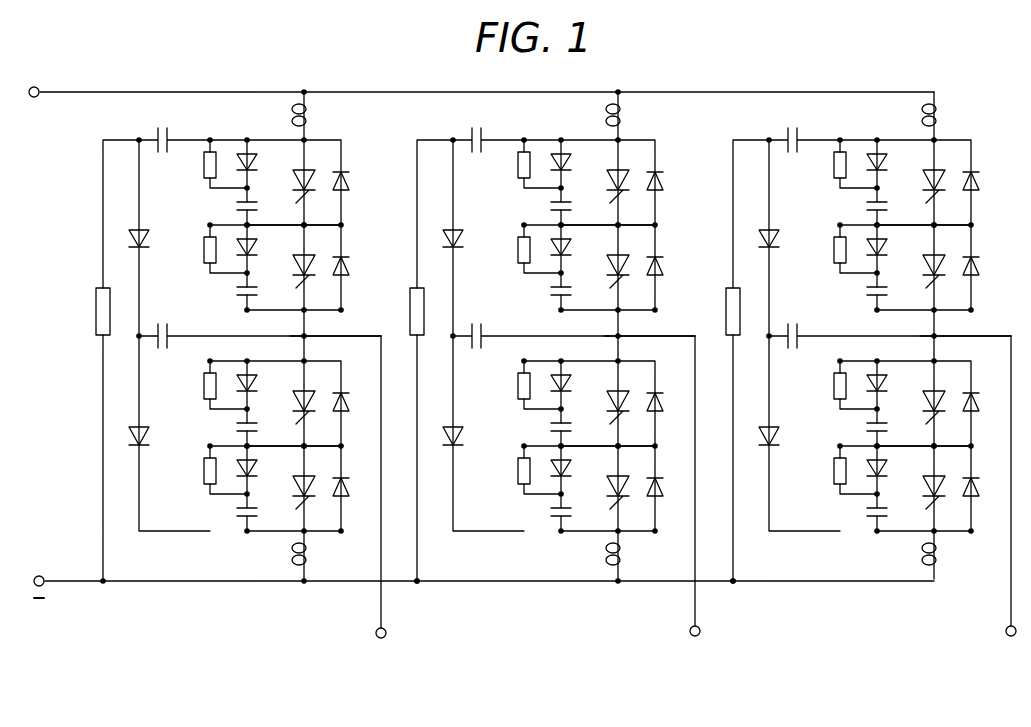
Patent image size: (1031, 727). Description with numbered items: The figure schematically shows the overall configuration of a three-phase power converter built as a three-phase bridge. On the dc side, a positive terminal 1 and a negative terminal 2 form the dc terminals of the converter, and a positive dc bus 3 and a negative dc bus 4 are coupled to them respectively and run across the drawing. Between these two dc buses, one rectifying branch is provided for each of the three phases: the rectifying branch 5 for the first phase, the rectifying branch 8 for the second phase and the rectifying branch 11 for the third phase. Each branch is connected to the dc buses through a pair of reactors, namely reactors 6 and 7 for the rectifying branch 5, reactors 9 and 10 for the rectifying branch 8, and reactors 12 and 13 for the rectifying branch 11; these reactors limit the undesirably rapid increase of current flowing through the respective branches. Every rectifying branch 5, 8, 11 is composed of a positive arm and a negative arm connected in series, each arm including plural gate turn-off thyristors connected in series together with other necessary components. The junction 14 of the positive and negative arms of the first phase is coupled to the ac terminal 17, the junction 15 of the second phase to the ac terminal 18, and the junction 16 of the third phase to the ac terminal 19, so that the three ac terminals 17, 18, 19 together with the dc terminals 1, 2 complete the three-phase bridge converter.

The positive dc terminal 1 is at (36, 86).
The negative dc terminal 2 is at (39, 575).
The dc bus 3 is at (165, 91).
The dc bus 4 is at (172, 583).
The rectifying branch 5 is at (226, 126).
The reactor 6 is at (312, 112).
The reactor 7 is at (313, 552).
The rectifying branch 8 is at (548, 126).
The reactor 9 is at (626, 112).
The reactor 10 is at (627, 552).
The rectifying branch 11 is at (870, 126).
The reactor 12 is at (942, 112).
The reactor 13 is at (943, 552).
The junction 14 is at (308, 334).
The junction 15 is at (622, 334).
The junction 16 is at (938, 334).
The ac terminal 17 is at (386, 633).
The ac terminal 18 is at (700, 631).
The ac terminal 19 is at (1006, 631).